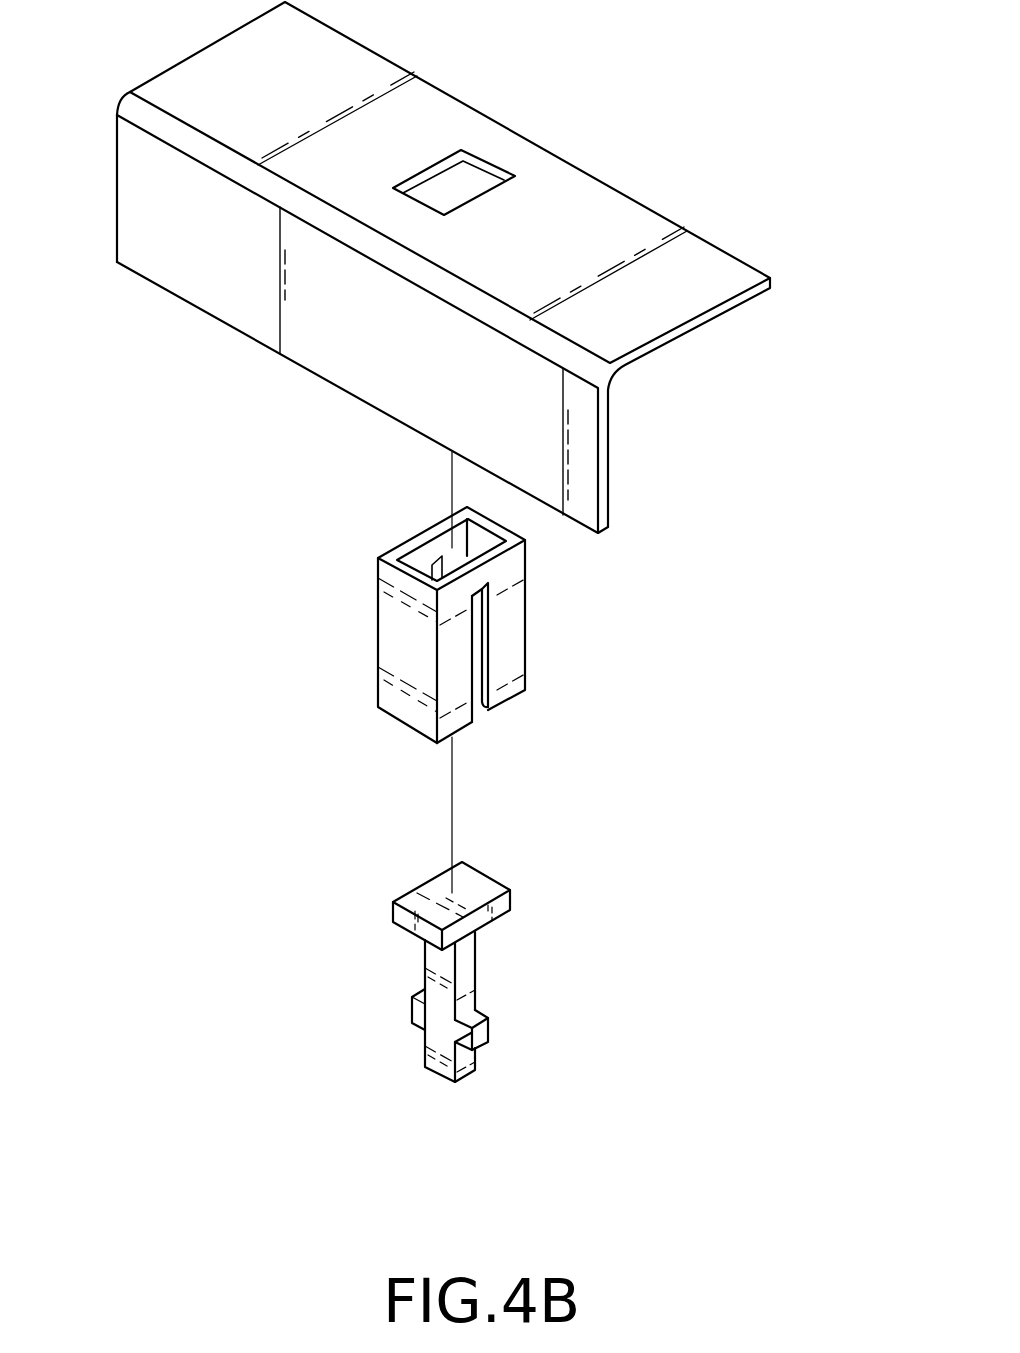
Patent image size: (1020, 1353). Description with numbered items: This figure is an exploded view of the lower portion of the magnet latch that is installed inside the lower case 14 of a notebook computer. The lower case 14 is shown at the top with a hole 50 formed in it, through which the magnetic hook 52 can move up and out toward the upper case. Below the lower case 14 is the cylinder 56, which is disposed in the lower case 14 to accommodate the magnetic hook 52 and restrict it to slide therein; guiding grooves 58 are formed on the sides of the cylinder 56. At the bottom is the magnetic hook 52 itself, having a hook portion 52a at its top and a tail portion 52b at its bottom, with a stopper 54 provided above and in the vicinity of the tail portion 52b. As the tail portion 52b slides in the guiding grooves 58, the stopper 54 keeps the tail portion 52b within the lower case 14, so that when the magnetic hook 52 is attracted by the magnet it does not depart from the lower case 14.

The lower case 14 is at (628, 197).
The hole 50 is at (463, 182).
The magnetic hook 52 is at (255, 855).
The hook portion 52a is at (413, 900).
The tail portion 52b is at (435, 1063).
The stopper 54 is at (480, 1033).
The cylinder 56 is at (517, 606).
The guiding grooves 58 is at (473, 673).